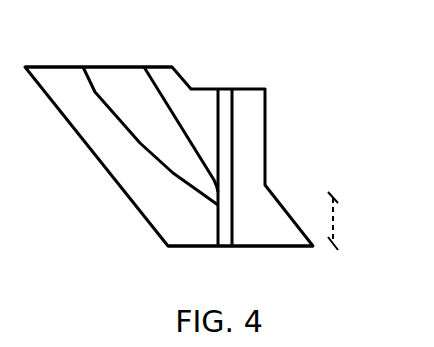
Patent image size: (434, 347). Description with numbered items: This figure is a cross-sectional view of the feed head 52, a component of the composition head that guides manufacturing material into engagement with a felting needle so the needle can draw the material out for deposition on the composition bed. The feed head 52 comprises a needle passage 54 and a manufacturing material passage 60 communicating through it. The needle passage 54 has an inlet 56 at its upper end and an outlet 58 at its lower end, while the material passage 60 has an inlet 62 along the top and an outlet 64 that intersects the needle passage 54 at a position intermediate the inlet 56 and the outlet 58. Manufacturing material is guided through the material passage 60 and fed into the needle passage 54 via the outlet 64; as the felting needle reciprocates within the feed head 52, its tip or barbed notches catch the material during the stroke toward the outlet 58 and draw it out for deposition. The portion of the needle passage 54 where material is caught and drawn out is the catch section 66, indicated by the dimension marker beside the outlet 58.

The feed head 52 is at (268, 128).
The needle passage 54 is at (225, 137).
The inlet 56 is at (230, 88).
The outlet 58 is at (228, 249).
The manufacturing material passage 60 is at (133, 113).
The inlet 62 is at (110, 64).
The outlet 64 is at (200, 192).
The catch section 66 is at (333, 217).